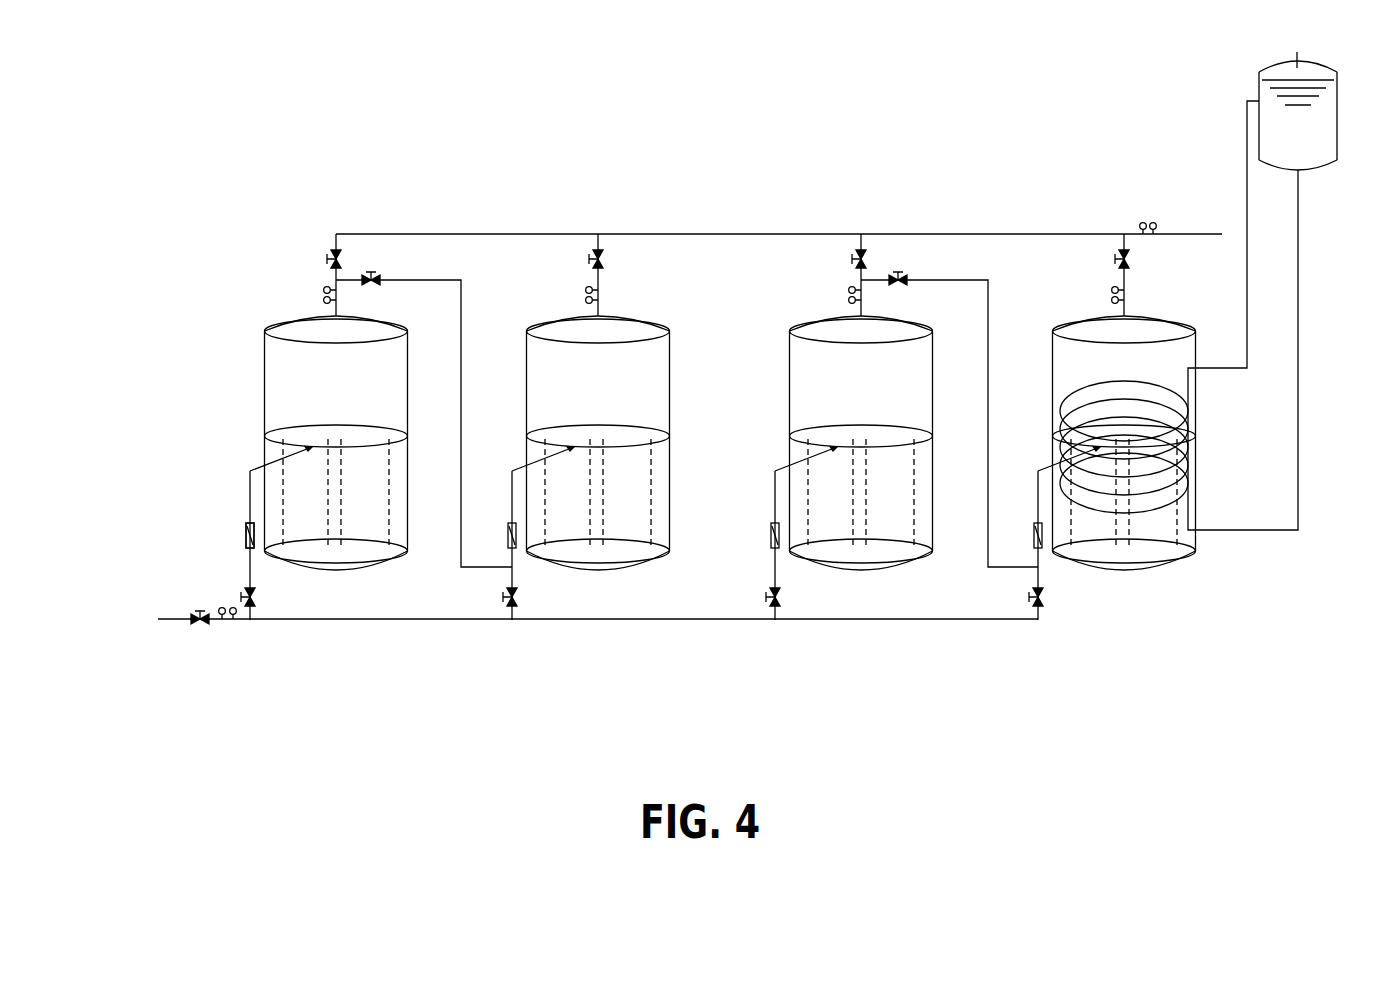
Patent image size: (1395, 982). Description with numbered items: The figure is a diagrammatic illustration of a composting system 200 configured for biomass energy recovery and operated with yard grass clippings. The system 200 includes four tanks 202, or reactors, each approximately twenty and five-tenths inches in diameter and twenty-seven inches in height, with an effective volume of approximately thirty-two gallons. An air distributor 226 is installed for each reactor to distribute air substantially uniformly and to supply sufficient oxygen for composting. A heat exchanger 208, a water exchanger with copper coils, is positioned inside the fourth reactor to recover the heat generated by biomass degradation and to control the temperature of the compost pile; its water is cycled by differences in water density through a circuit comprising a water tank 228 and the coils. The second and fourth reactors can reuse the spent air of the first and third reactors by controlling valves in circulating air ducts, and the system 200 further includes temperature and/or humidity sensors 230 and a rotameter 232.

The system 200 is at (300, 62).
The tanks 202 is at (264, 410).
The heat exchanger 208 is at (1100, 378).
The air distributor 226 is at (393, 357).
The water tank 228 is at (1338, 116).
The temperature and/or humidity sensors 230 is at (321, 290).
The rotameter 232 is at (244, 530).